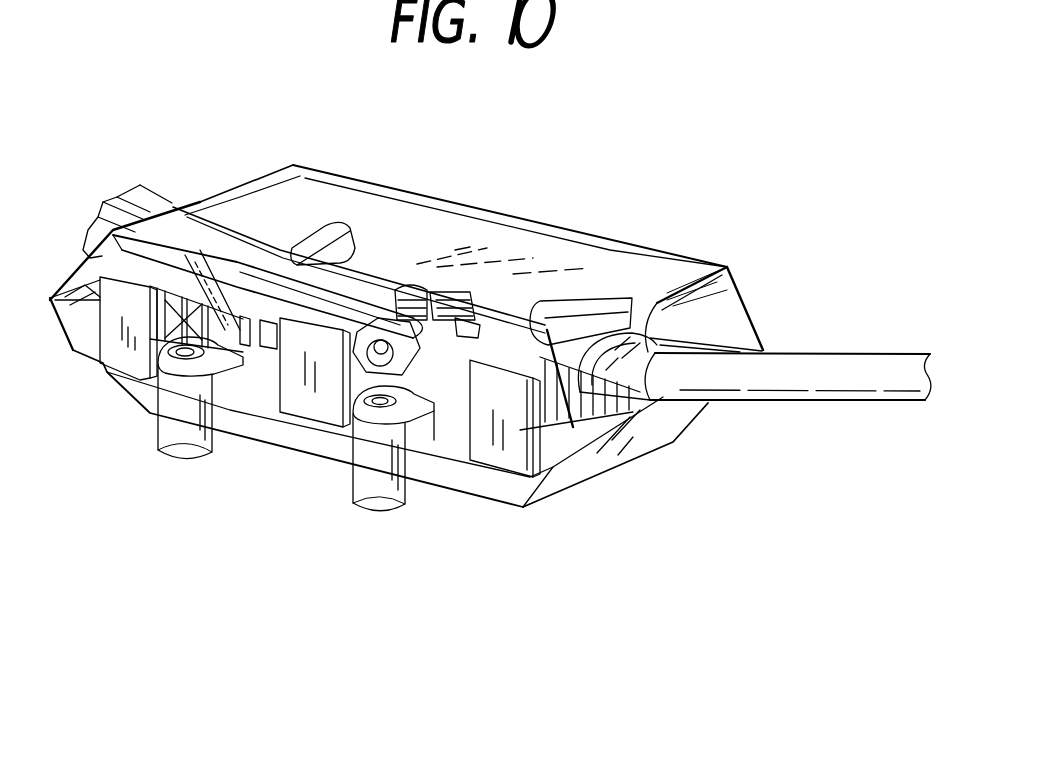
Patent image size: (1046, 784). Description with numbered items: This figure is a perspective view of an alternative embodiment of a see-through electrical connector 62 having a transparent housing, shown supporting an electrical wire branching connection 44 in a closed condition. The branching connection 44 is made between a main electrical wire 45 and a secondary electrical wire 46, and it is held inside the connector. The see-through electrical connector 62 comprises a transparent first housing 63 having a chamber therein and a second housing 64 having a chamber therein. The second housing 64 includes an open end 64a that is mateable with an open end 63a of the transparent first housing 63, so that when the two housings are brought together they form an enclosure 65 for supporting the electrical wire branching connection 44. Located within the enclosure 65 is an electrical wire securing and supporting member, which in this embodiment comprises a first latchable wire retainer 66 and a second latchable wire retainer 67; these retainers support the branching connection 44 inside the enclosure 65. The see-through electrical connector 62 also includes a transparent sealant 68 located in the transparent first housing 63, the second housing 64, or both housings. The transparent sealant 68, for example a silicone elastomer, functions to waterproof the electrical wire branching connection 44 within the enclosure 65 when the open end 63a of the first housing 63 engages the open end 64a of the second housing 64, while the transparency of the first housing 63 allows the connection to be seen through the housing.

The electrical wire branching connection 44 is at (440, 353).
The main electrical wire 45 is at (790, 353).
The secondary electrical wire 46 is at (88, 229).
The see-through electrical connector 62 is at (668, 182).
The transparent first housing 63 is at (752, 307).
The open end of the transparent first housing 63a is at (648, 302).
The second housing 64 is at (613, 468).
The open end of the second housing 64a is at (645, 397).
The enclosure 65 is at (427, 250).
The first latchable wire retainer 66 is at (324, 226).
The second latchable wire retainer 67 is at (607, 302).
The transparent sealant 68 is at (470, 207).